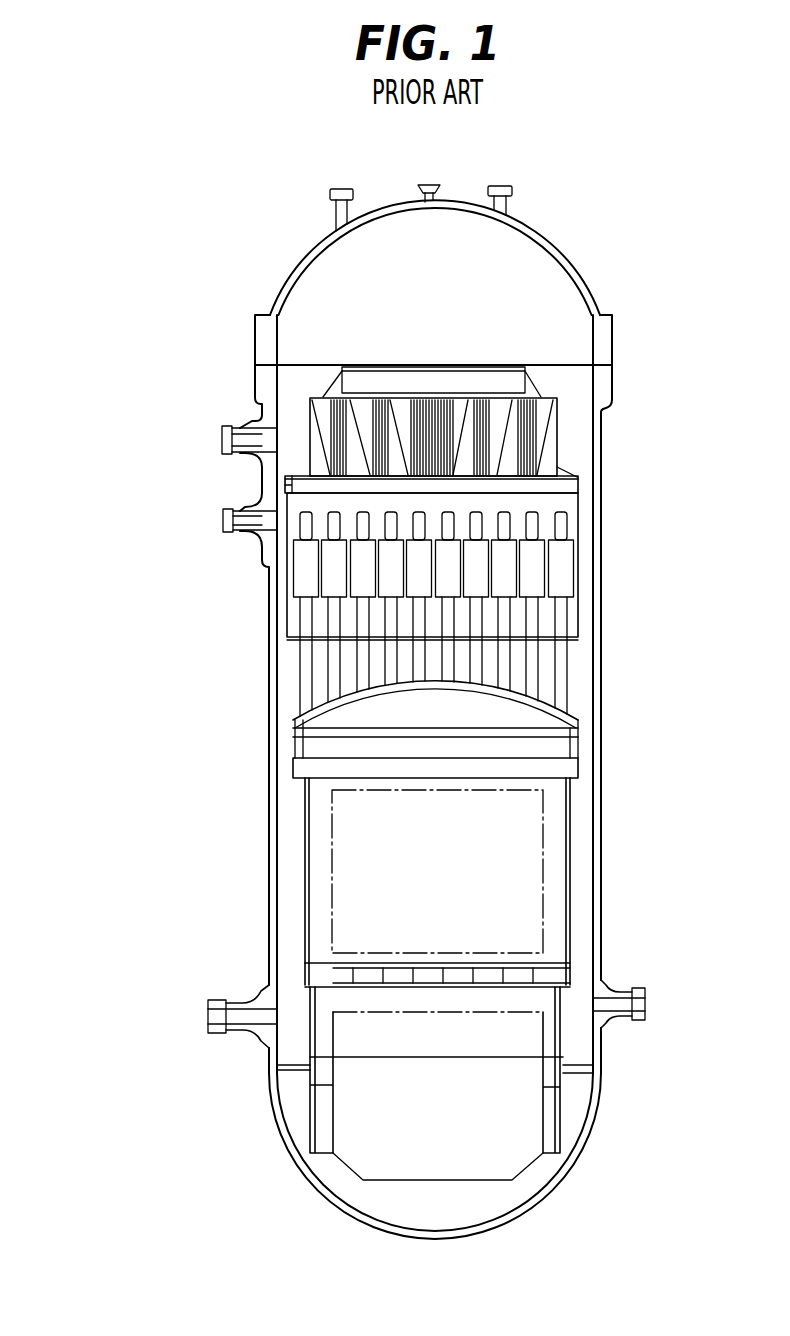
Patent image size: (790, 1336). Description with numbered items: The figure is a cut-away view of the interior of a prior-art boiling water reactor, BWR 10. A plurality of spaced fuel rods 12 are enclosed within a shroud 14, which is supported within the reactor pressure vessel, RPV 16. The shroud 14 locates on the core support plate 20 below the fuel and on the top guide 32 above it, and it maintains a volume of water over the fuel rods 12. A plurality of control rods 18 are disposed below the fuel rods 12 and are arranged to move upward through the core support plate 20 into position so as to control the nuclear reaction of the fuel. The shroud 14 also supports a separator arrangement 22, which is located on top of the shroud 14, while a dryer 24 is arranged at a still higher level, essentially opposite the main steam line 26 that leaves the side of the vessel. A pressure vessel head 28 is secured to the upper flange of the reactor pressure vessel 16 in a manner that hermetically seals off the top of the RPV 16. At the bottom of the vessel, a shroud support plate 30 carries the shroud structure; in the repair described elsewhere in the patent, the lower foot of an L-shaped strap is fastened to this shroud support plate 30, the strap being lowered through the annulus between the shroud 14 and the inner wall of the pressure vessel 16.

The boiling water reactor (BWR) 10 is at (190, 356).
The fuel rods 12 is at (358, 900).
The shroud 14 is at (305, 845).
The reactor pressure vessel (RPV) 16 is at (268, 645).
The control rods 18 is at (363, 1128).
The core support plate 20 is at (322, 968).
The separator arrangement 22 is at (583, 623).
The dryer 24 is at (548, 458).
The main steam line 26 is at (221, 440).
The pressure vessel head 28 is at (284, 278).
The shroud support plate 30 is at (582, 1072).
The top guide 32 is at (555, 770).